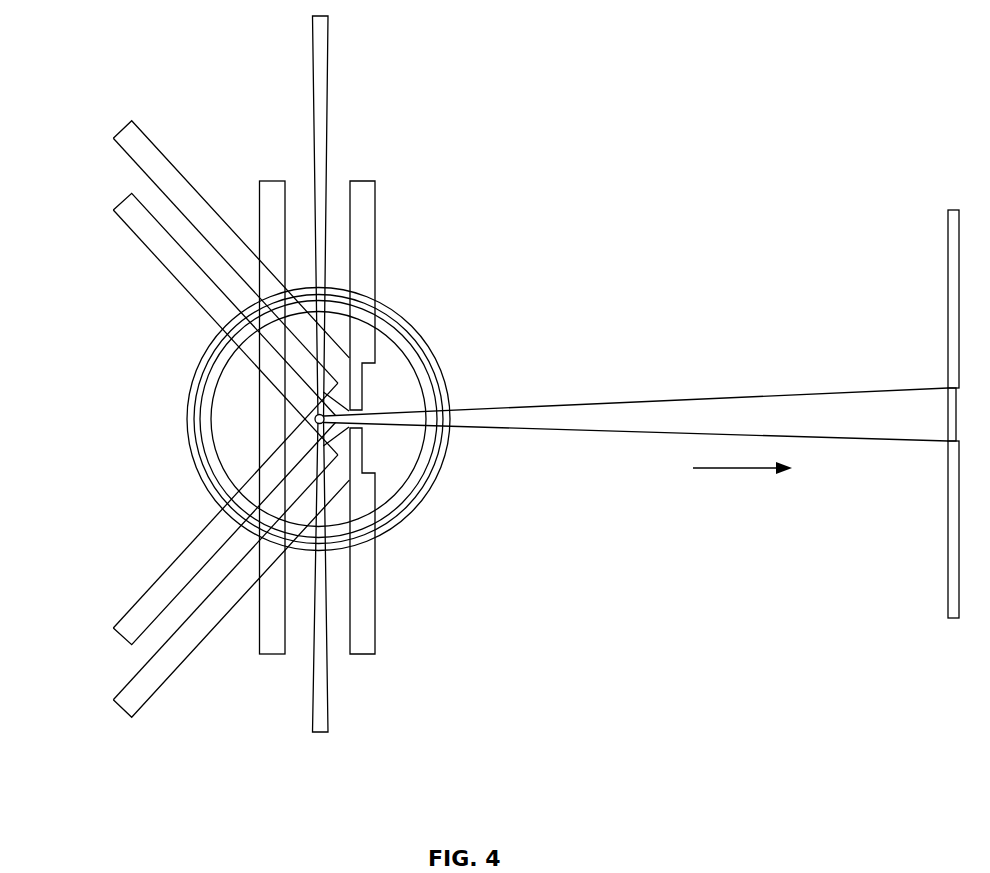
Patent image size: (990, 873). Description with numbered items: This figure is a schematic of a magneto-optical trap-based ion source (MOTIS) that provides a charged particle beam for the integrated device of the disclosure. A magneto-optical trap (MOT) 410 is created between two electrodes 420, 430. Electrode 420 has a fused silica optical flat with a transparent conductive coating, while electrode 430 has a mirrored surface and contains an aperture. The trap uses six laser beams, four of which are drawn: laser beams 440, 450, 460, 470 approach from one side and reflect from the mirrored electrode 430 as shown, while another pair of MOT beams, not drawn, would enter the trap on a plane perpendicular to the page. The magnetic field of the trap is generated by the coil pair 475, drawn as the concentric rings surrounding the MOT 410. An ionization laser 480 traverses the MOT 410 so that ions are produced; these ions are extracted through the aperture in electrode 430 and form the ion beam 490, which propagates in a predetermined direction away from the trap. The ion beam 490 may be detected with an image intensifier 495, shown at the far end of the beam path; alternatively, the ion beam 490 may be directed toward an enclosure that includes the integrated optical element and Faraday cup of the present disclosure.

The magneto-optical trap 410 is at (311, 414).
The electrode 420 is at (272, 181).
The electrode 430 is at (376, 222).
The laser beam 440 is at (126, 602).
The laser beam 450 is at (150, 694).
The laser beam 460 is at (126, 121).
The laser beam 470 is at (126, 194).
The coil pair 475 is at (186, 420).
The ionization laser 480 is at (328, 700).
The ion beam 490 is at (655, 440).
The image intensifier 495 is at (948, 262).